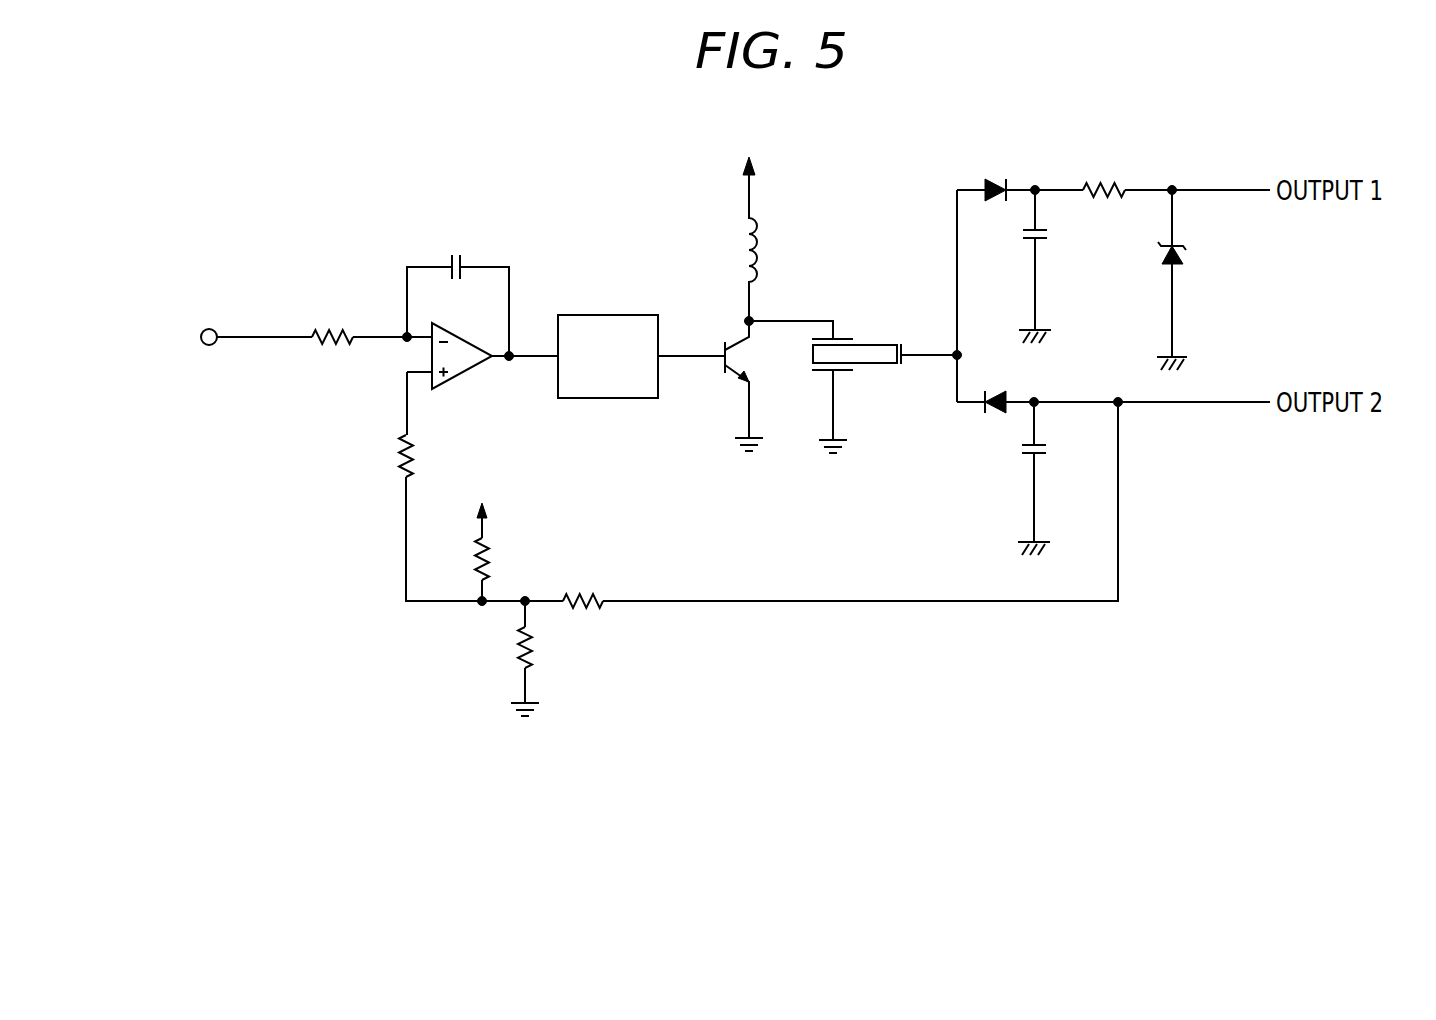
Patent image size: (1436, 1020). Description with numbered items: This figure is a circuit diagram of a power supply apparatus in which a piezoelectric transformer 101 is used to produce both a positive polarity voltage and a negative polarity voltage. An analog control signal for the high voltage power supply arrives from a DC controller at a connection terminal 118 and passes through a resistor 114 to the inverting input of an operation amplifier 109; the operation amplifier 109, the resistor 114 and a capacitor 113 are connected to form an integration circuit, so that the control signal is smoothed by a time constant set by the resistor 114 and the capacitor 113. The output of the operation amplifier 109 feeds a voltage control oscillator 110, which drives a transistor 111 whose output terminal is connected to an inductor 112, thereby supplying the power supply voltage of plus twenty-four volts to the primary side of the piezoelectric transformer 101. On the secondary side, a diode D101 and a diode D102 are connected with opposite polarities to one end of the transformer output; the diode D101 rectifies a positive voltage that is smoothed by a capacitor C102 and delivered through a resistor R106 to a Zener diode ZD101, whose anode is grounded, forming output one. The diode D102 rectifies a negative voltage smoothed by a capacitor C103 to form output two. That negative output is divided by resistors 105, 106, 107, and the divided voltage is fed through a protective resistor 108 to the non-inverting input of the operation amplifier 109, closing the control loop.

The piezoelectric transformer 101 is at (880, 340).
The resistor 105 is at (587, 592).
The resistor 106 is at (494, 547).
The resistor 107 is at (512, 660).
The protective resistor 108 is at (397, 470).
The operation amplifier 109 is at (465, 376).
The voltage control oscillator 110 is at (628, 313).
The transistor 111 is at (733, 380).
The inductor 112 is at (753, 242).
The capacitor 113 is at (456, 250).
The resistor 114 is at (331, 348).
The connection terminal 118 is at (209, 346).
The diode D101 is at (1020, 173).
The diode D102 is at (1109, 419).
The capacitor C102 is at (1059, 266).
The capacitor C103 is at (1056, 478).
The resistor R106 is at (1175, 172).
The Zener diode ZD101 is at (1209, 280).